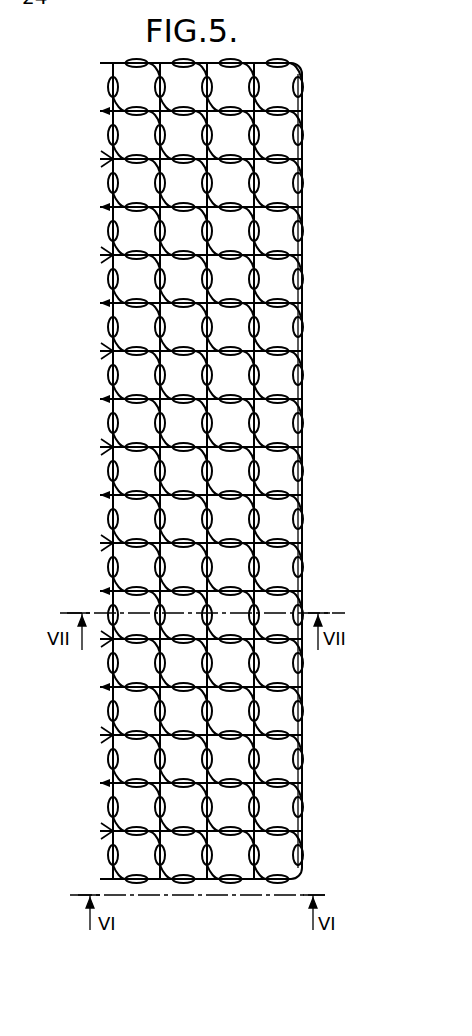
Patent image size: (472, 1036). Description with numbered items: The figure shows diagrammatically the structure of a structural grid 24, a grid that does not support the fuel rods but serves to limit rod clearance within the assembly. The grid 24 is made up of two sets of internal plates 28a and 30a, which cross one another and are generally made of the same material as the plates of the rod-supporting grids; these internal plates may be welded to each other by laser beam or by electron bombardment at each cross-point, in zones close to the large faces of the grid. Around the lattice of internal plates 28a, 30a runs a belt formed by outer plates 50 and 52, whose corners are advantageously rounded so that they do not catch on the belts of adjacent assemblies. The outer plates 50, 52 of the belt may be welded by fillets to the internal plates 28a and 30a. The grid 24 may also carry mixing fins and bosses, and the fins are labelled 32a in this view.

The structural grid 24 is at (97, 61).
The outer plate 50 is at (302, 128).
The outer plate 52 is at (125, 878).
The plates 28a is at (113, 324).
The plates 30a is at (112, 467).
The diagonal link wires 32a is at (112, 444).